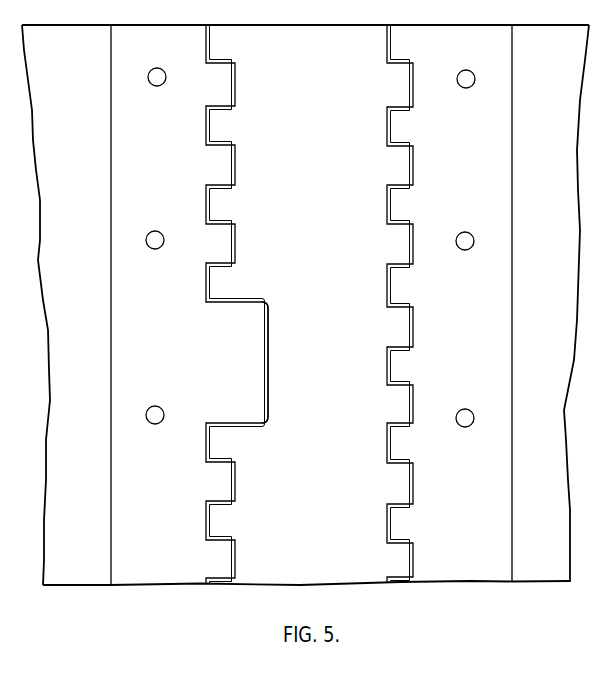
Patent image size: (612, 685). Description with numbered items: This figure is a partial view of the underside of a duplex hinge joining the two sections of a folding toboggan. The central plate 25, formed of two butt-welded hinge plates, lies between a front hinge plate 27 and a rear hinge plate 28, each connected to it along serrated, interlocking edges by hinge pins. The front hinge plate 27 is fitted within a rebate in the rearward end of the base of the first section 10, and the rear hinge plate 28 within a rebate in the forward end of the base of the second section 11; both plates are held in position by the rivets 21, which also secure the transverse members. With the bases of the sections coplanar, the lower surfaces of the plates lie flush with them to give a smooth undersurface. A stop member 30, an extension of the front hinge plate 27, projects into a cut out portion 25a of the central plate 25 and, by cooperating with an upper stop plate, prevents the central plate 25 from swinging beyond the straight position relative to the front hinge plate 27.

The first section 10 is at (86, 110).
The second section 11 is at (557, 214).
The rivets 21 is at (163, 70).
The central plate 25 is at (319, 237).
The cut out portion 25a is at (268, 333).
The front hinge plate 27 is at (168, 212).
The rear hinge plate 28 is at (466, 214).
The stop member 30 is at (237, 362).